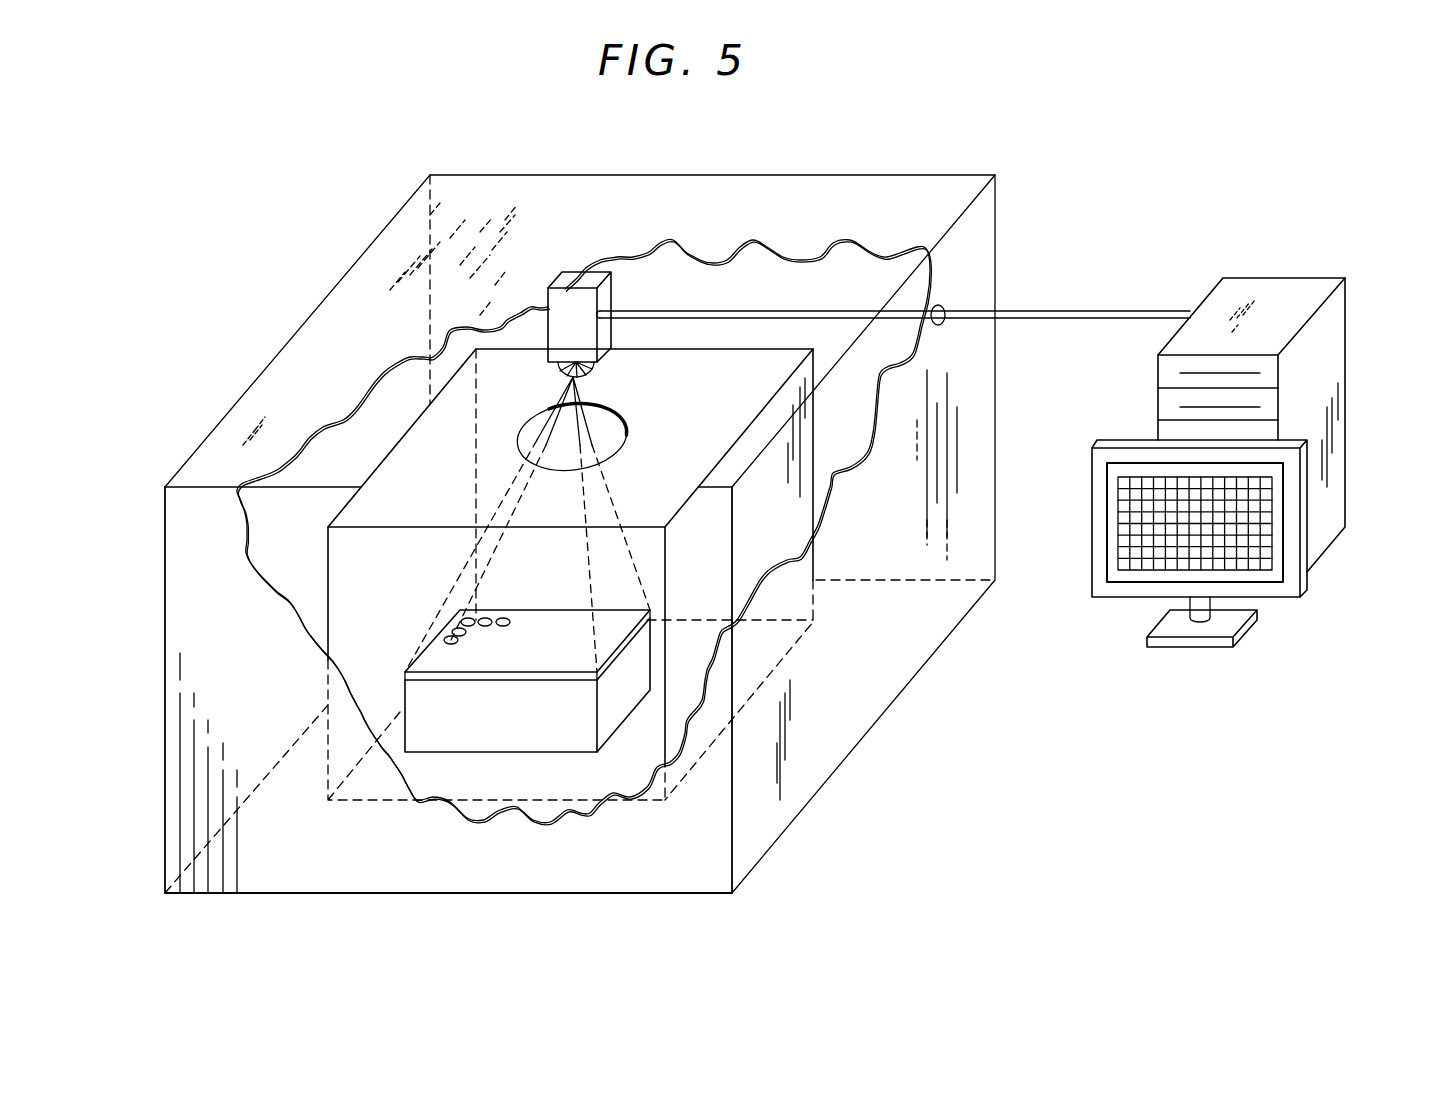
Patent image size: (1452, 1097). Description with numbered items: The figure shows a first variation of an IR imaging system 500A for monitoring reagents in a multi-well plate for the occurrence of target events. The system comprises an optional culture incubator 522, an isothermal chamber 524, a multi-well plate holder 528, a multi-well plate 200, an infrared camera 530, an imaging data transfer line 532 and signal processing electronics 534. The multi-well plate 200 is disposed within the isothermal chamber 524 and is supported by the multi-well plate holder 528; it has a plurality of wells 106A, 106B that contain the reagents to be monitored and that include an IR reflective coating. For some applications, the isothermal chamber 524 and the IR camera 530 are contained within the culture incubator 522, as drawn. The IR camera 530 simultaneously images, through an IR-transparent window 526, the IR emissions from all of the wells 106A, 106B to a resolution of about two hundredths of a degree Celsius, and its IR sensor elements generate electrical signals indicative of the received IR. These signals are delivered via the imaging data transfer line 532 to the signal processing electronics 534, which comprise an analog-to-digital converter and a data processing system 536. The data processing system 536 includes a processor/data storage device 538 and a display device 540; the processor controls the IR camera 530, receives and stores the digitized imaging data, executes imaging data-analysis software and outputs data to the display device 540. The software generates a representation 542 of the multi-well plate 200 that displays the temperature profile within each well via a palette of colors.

The IR imaging system 500A is at (1026, 144).
The culture incubator 522 is at (380, 268).
The isothermal chamber 524 is at (731, 400).
The IR-transparent window 526 is at (611, 409).
The multi-well plate holder 528 is at (535, 737).
The multi-well plate 200 is at (533, 620).
The well 106A is at (435, 642).
The well 106B is at (405, 631).
The infrared camera 530 is at (608, 300).
The imaging data transfer line 532 is at (747, 314).
The signal processing electronics 534 is at (1161, 281).
The data processing system 536 is at (1366, 328).
The processor/data storage device 538 is at (1270, 296).
The display device 540 is at (1092, 470).
The representation 542 is at (1135, 565).